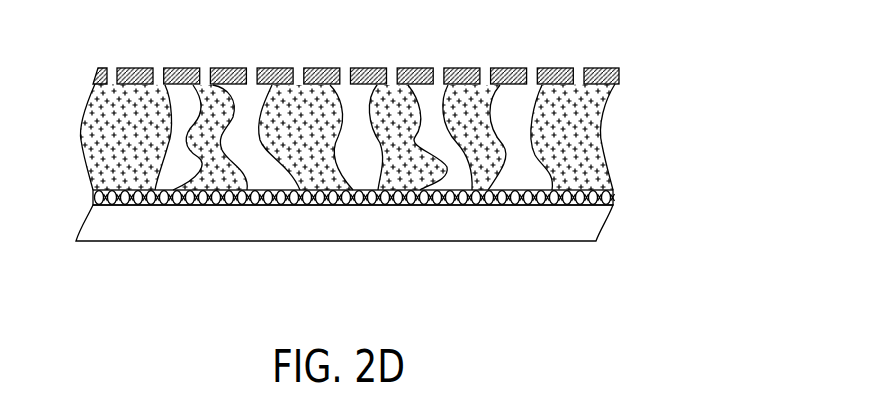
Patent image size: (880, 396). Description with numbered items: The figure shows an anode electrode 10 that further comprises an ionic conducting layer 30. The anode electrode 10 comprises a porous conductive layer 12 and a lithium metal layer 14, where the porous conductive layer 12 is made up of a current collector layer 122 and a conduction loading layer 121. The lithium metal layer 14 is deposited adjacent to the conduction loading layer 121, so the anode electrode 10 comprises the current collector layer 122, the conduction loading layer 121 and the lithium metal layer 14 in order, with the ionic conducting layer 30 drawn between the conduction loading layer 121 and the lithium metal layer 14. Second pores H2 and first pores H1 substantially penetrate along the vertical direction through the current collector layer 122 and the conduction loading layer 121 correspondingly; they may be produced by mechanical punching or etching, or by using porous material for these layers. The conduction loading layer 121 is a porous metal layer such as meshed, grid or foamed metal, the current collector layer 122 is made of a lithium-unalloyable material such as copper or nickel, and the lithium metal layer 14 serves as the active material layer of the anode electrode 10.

The anode electrode 10 is at (399, 137).
The porous conductive layer 12 is at (421, 124).
The conduction loading layer 121 is at (598, 130).
The current collector layer 122 is at (619, 73).
The ionic conducting layer 30 is at (612, 197).
The lithium metal layer 14 is at (595, 225).
The first pores H1 is at (270, 181).
The second pores H2 is at (533, 68).